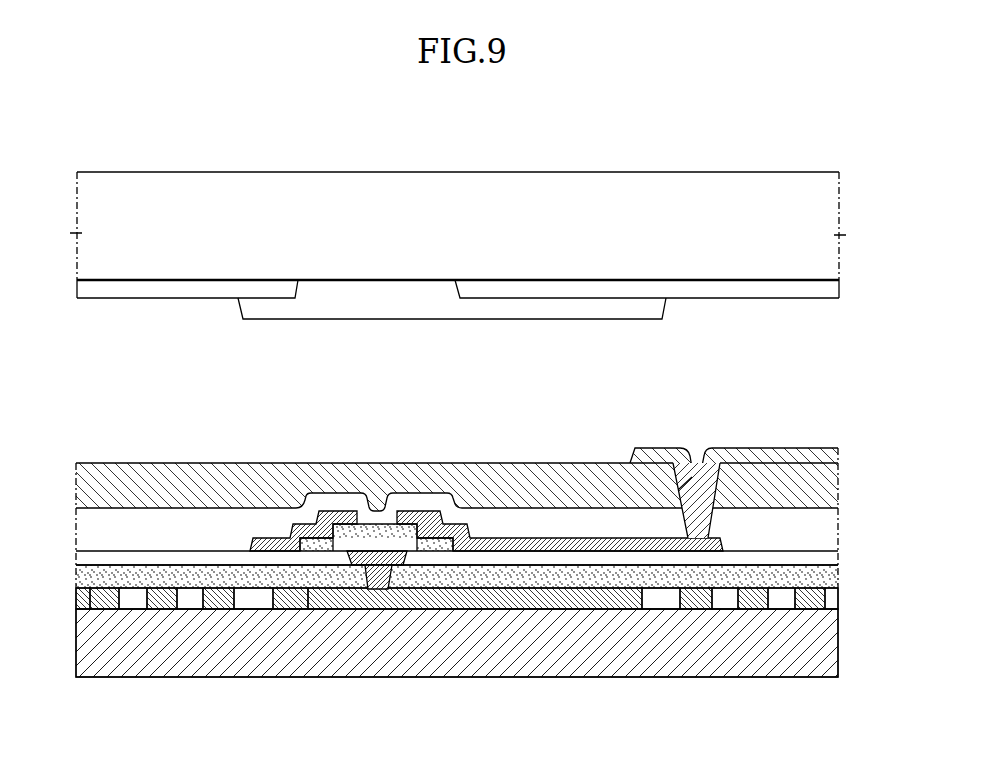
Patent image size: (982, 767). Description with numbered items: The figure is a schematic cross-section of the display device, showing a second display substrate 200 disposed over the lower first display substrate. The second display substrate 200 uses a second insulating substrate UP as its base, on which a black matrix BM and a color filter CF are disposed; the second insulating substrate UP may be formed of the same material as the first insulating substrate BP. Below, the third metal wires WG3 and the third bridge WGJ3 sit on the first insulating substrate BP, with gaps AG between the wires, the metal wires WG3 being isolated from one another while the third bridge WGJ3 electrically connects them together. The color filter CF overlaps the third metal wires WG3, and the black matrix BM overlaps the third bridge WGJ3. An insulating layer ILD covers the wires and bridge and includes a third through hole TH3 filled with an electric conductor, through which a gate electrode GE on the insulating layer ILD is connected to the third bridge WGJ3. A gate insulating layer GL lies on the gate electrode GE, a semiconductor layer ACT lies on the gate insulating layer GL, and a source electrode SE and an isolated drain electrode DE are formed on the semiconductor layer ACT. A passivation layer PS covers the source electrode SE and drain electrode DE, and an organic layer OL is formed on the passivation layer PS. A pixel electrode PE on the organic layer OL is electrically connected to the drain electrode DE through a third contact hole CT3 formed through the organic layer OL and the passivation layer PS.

The second display substrate 200 is at (456, 239).
The second insulating substrate UP is at (838, 216).
The color filter CF is at (82, 292).
The black matrix BM is at (386, 311).
The first insulating substrate BP is at (838, 640).
The third metal wires WG3 is at (103, 609).
The air gap AG is at (190, 609).
The third bridge WGJ3 is at (465, 605).
The insulating layer ILD is at (838, 582).
The gate insulating layer GL is at (838, 558).
The third through hole TH3 is at (367, 573).
The gate electrode GE is at (385, 556).
The passivation layer PS is at (838, 530).
The source electrode SE is at (337, 515).
The semiconductor layer ACT is at (422, 530).
The drain electrode DE is at (549, 545).
The organic layer OL is at (838, 488).
The pixel electrode PE is at (838, 455).
The third contact hole CT3 is at (697, 468).